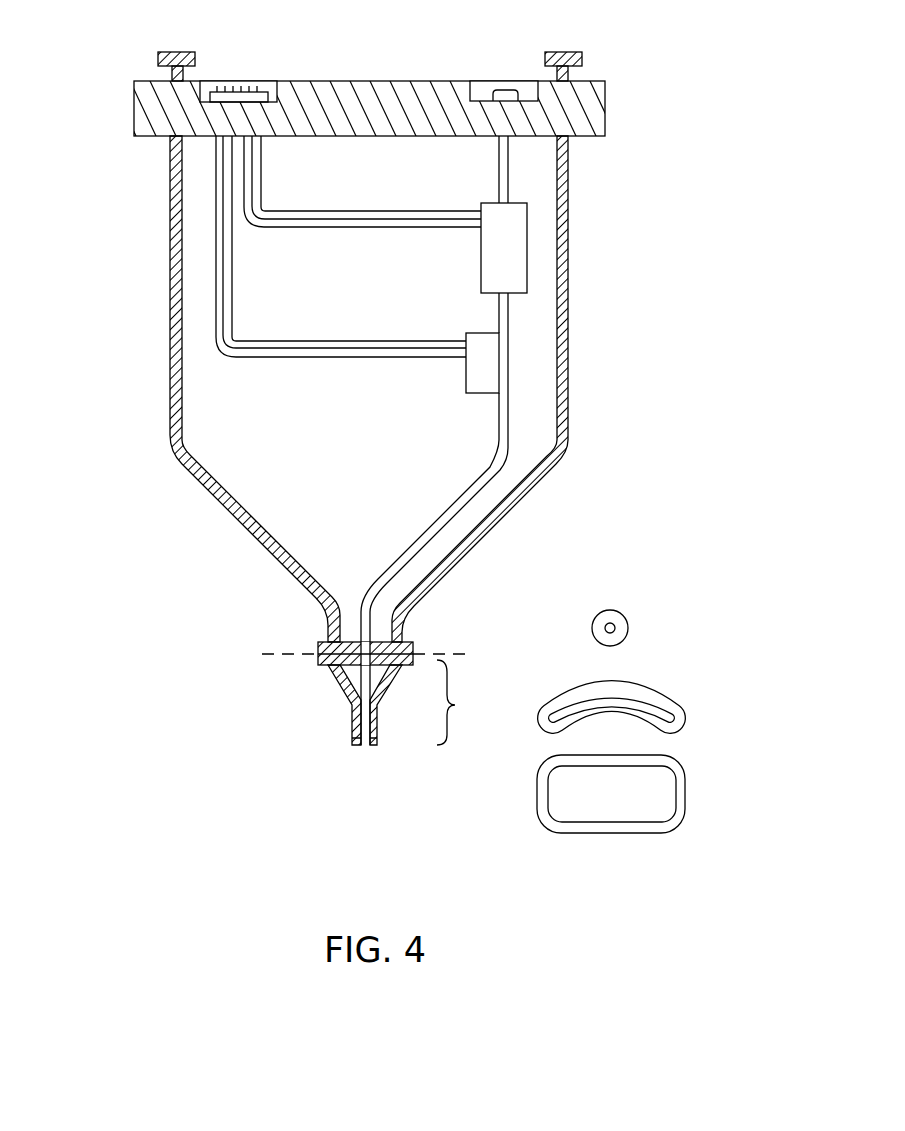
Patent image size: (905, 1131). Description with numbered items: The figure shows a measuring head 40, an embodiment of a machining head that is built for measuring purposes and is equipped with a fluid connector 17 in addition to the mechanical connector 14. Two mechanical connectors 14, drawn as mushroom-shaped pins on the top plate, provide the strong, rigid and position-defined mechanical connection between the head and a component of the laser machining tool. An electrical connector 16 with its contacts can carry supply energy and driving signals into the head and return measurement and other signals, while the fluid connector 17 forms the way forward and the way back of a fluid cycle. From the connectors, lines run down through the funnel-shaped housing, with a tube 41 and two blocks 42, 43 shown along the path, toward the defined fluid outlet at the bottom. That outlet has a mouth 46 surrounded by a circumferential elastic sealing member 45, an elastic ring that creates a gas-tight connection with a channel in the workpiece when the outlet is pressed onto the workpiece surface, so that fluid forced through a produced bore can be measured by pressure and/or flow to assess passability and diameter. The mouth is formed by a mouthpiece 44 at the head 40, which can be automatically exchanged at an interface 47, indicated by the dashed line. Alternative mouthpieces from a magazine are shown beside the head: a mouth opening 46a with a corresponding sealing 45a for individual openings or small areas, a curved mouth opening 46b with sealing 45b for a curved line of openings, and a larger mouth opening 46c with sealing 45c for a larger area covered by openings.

The mechanical connector 14 is at (176, 52).
The electrical connector 16 is at (254, 81).
The fluid connector 17 is at (506, 83).
The measuring head 40 is at (641, 90).
The tube 41 is at (500, 163).
The valve block 42 is at (485, 262).
The valve block 43 is at (470, 382).
The mouthpiece 44 is at (409, 702).
The elastic sealing member 45 is at (352, 745).
The mouth 46 is at (366, 748).
The interface 47 is at (272, 656).
The sealing 45a is at (628, 628).
The mouth opening 46a is at (609, 623).
The sealing 45b is at (686, 712).
The mouth opening 46b is at (666, 703).
The sealing 45c is at (678, 817).
The mouth opening 46c is at (658, 785).